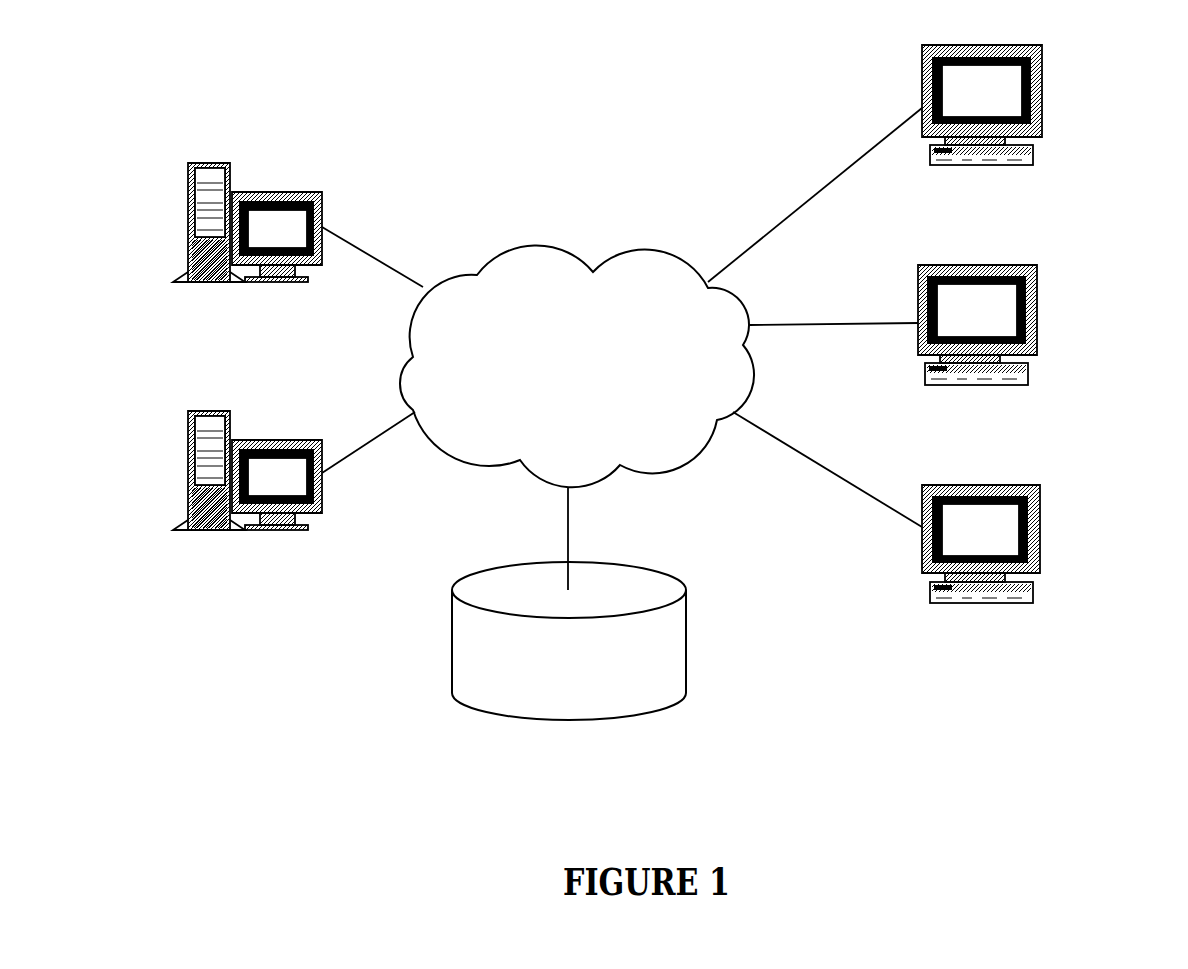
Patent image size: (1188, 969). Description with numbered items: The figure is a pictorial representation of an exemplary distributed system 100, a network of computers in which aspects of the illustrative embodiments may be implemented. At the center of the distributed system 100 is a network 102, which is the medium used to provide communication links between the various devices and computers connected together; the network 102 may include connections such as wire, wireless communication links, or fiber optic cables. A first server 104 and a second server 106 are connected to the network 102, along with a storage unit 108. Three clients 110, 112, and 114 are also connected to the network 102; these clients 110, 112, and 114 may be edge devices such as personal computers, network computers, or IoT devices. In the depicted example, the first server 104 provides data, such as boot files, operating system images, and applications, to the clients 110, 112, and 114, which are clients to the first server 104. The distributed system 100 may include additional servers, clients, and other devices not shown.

The distributed system 100 is at (707, 104).
The network 102 is at (547, 248).
The first server 104 is at (188, 222).
The second server 106 is at (188, 472).
The storage unit 108 is at (452, 638).
The client 110 is at (1042, 105).
The client 112 is at (1037, 323).
The client 114 is at (1042, 543).